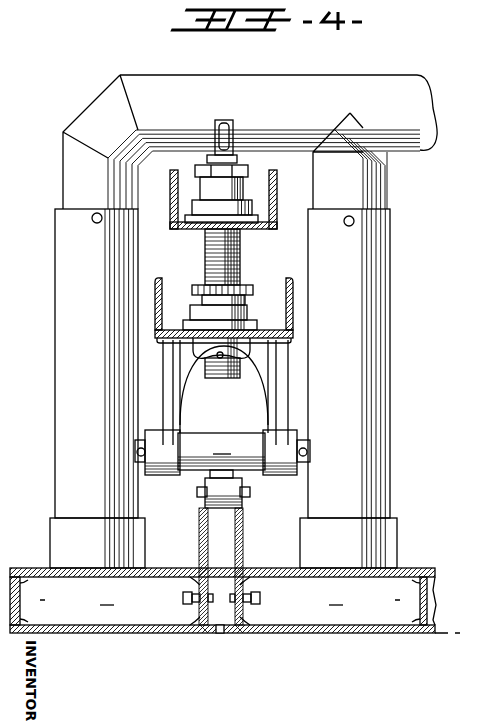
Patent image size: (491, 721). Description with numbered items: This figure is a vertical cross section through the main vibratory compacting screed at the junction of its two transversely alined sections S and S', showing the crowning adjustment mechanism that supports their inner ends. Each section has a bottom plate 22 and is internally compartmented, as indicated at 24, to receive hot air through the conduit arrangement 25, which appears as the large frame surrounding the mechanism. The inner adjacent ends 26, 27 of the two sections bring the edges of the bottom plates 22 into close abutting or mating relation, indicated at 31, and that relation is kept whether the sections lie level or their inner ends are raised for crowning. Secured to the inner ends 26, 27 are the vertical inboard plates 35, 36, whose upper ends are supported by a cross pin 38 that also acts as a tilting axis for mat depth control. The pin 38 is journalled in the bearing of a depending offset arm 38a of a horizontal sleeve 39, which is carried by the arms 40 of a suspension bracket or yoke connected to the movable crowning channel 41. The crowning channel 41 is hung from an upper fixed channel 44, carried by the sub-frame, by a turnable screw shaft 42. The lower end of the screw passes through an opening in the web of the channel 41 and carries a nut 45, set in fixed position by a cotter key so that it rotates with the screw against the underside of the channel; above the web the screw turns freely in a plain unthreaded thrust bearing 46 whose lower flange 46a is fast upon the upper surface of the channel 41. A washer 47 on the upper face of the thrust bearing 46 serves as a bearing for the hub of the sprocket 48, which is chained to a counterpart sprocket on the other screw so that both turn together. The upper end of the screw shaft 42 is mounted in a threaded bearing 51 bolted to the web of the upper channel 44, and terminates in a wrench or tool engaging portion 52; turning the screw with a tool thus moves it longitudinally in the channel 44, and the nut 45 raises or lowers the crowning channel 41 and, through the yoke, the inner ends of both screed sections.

The conduit arrangement 25 is at (303, 80).
The bottom plate 22 is at (118, 633).
The internal compartment 24 is at (145, 607).
The vertical inboard plate 35 is at (203, 546).
The vertical inboard plate 36 is at (243, 548).
The inner adjacent end 26 is at (205, 627).
The inner adjacent end 27 is at (248, 632).
The abutting relation of plate edges 31 is at (227, 646).
The cross pin 38 is at (245, 490).
The depending offset arm 38a is at (208, 492).
The horizontal sleeve 39 is at (222, 452).
The arm of suspension bracket or yoke 40 is at (179, 405).
The crowning channel 41 is at (161, 285).
The upper fixed channel 44 is at (190, 228).
The wrench or tool engaging portion 52 is at (226, 120).
The threaded bearing 51 is at (244, 190).
The screw shaft 42 is at (242, 258).
The sprocket 48 is at (252, 288).
The washer 47 is at (248, 306).
The thrust bearing 46 is at (250, 314).
The lower flange 46a is at (262, 327).
The nut 45 is at (246, 356).